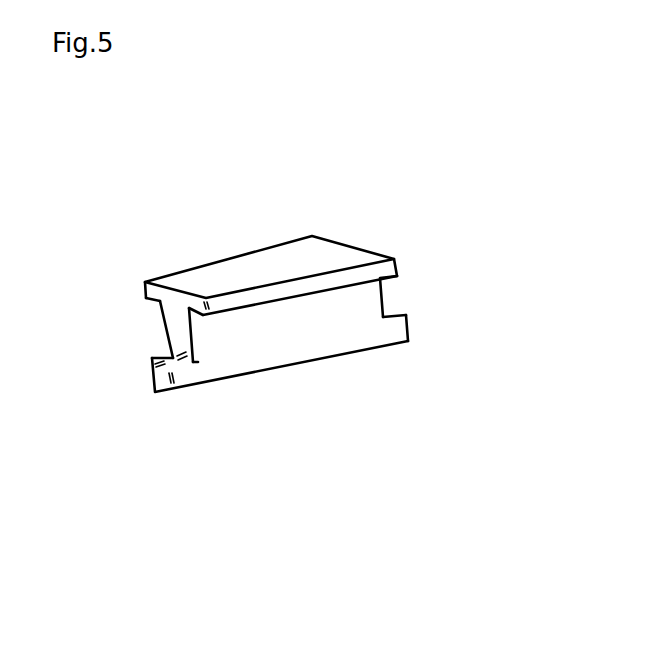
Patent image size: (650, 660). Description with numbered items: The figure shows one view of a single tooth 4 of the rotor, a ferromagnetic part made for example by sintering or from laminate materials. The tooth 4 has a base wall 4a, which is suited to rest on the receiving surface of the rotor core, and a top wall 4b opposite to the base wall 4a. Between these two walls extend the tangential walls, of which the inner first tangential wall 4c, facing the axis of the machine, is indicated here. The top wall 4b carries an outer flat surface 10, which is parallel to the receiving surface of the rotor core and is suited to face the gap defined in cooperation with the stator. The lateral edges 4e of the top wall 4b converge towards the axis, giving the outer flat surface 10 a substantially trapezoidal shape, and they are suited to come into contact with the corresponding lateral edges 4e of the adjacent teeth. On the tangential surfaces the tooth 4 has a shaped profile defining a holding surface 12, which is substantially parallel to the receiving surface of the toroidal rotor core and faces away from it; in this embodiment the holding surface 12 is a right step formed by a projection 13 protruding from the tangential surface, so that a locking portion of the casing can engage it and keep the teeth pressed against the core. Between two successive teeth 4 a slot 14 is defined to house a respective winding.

The tooth 4 is at (384, 187).
The base wall 4a is at (227, 398).
The top wall 4b is at (229, 258).
The first tangential wall 4c is at (158, 331).
The lateral edges 4e is at (145, 293).
The outer flat surface 10 is at (300, 238).
The holding surface 12 is at (151, 356).
The projection 13 is at (162, 378).
The slot 14 is at (400, 284).